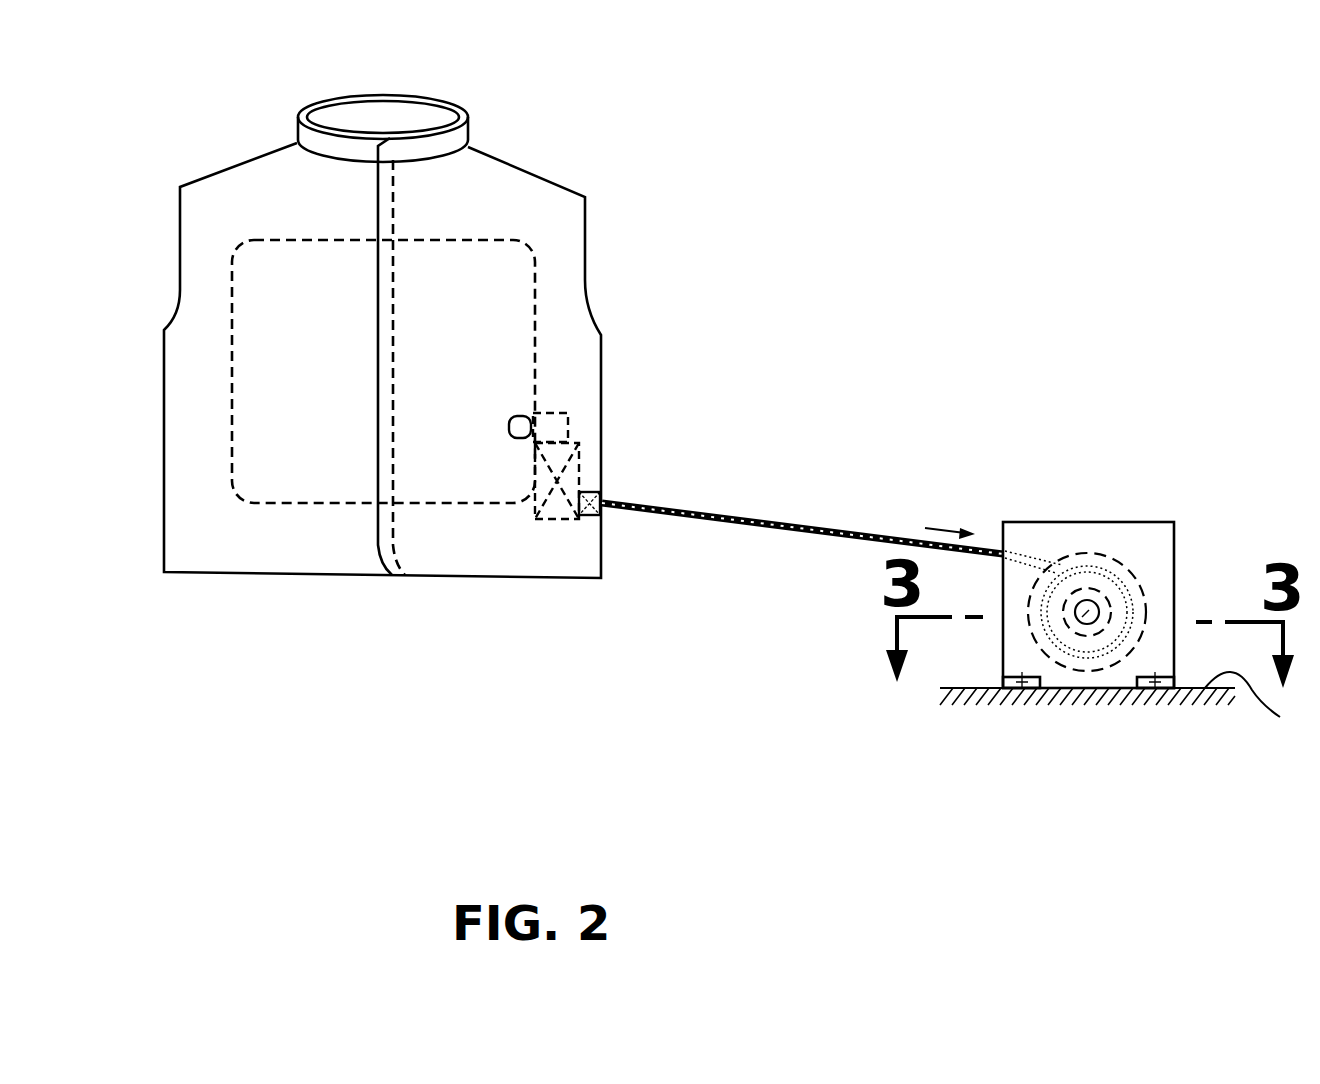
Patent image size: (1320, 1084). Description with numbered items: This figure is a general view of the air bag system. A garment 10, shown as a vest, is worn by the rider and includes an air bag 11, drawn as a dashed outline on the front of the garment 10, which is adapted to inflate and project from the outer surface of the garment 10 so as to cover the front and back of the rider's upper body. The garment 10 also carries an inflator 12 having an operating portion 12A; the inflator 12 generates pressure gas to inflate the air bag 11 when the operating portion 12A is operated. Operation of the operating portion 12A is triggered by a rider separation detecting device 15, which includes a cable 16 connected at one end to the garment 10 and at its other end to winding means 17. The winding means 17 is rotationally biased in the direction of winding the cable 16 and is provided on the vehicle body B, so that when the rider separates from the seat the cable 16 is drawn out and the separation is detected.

The garment 10 is at (228, 172).
The air bag 11 is at (515, 268).
The inflator 12 is at (552, 525).
The operating portion 12A is at (598, 532).
The rider separation detecting device 15 is at (858, 520).
The cable 16 is at (738, 515).
The winding means 17 is at (1081, 535).
The vehicle body B is at (1247, 717).